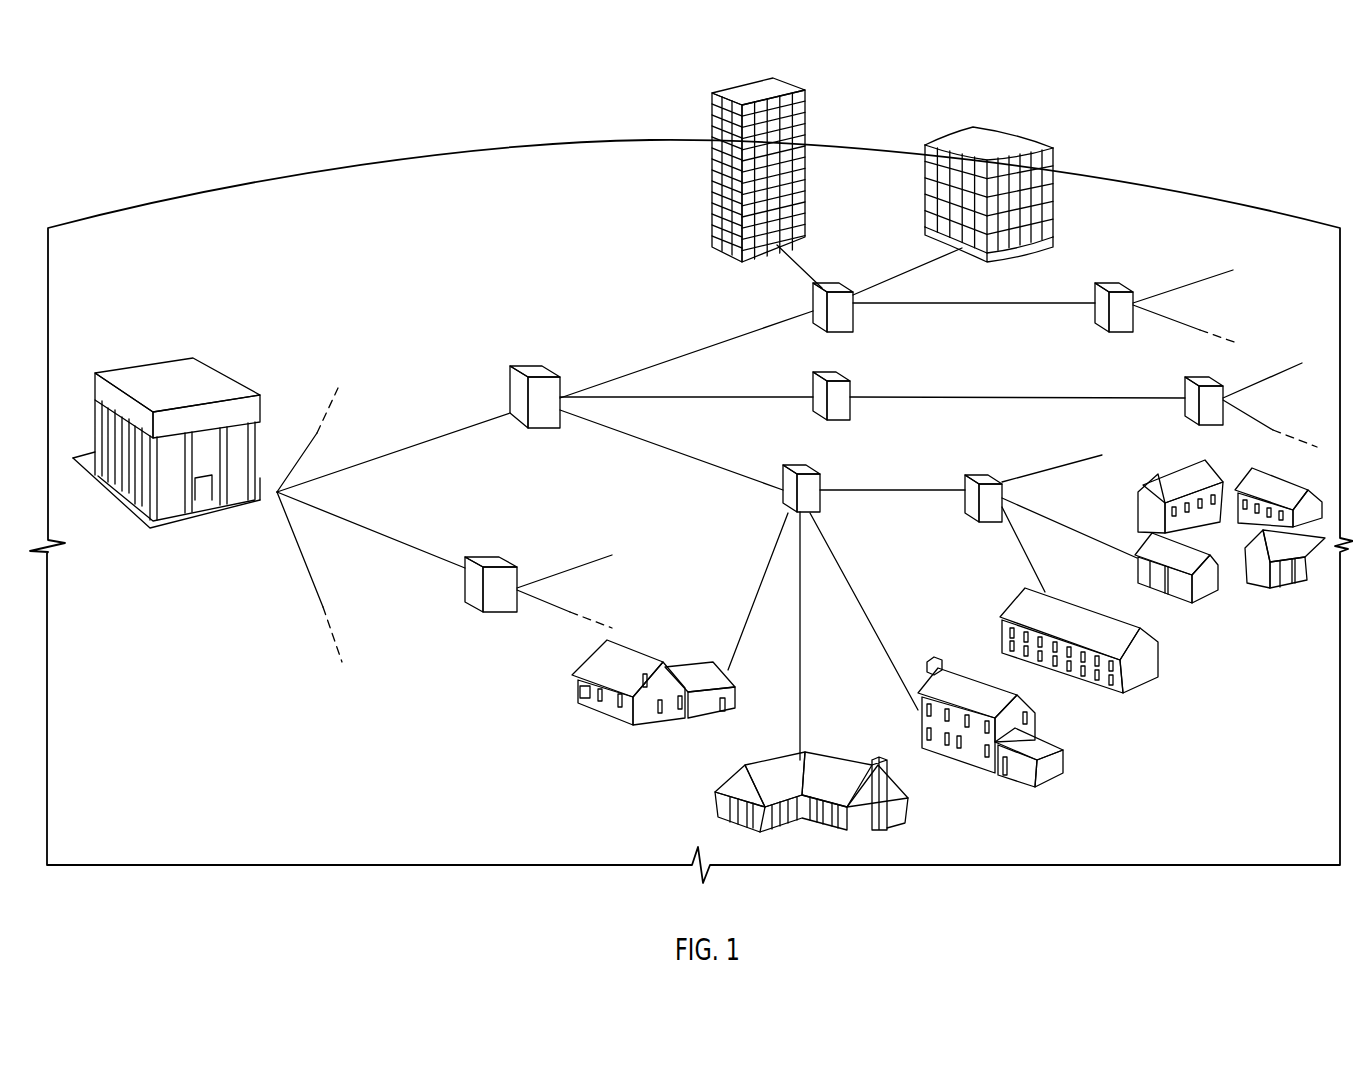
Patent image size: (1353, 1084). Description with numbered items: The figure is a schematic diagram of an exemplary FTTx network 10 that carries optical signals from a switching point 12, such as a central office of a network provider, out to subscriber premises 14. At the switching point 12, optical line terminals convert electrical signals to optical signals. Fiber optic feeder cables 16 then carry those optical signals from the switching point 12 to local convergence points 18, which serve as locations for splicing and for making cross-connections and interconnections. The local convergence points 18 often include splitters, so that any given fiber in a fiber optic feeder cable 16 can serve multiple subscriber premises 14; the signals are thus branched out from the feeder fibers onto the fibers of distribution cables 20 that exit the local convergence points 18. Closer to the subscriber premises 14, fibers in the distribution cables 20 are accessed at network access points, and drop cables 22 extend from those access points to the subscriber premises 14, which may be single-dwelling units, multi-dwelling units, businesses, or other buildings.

The FTTx network 10 is at (1227, 117).
The switching point 12 is at (163, 373).
The subscriber premises 14 is at (750, 90).
The fiber optic feeder cables 16 is at (307, 435).
The local convergence points 18 is at (532, 368).
The distribution cables 20 is at (577, 563).
The drop cables 22 is at (567, 610).